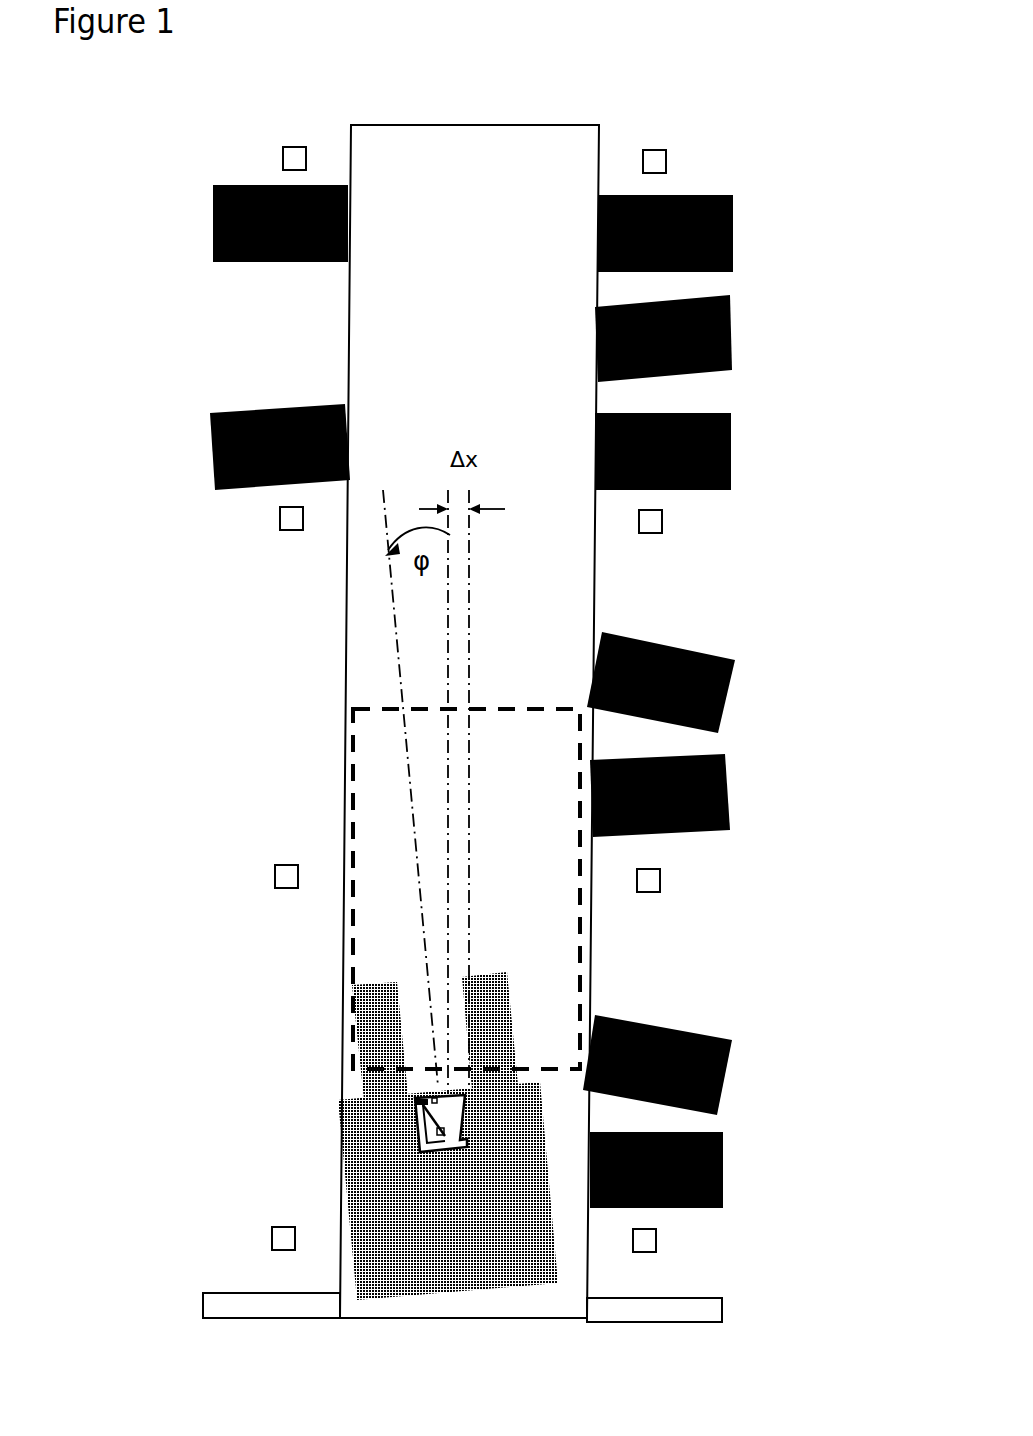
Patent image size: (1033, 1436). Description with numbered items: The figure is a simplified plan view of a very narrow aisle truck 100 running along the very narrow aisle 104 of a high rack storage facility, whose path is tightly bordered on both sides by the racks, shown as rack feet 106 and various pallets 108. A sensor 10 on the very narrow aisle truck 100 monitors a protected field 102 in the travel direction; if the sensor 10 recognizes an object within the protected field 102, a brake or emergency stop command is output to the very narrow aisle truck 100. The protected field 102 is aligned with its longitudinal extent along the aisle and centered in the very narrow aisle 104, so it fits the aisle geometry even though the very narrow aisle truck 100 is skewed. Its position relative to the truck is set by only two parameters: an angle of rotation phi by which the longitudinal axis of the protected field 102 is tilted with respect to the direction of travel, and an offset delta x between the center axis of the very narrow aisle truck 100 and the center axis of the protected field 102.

The sensor 10 is at (340, 1106).
The very narrow aisle truck 100 is at (475, 1267).
The protected field 102 is at (582, 930).
The very narrow aisle 104 is at (502, 125).
The rack feet 106 is at (282, 163).
The pallets 108 is at (731, 442).